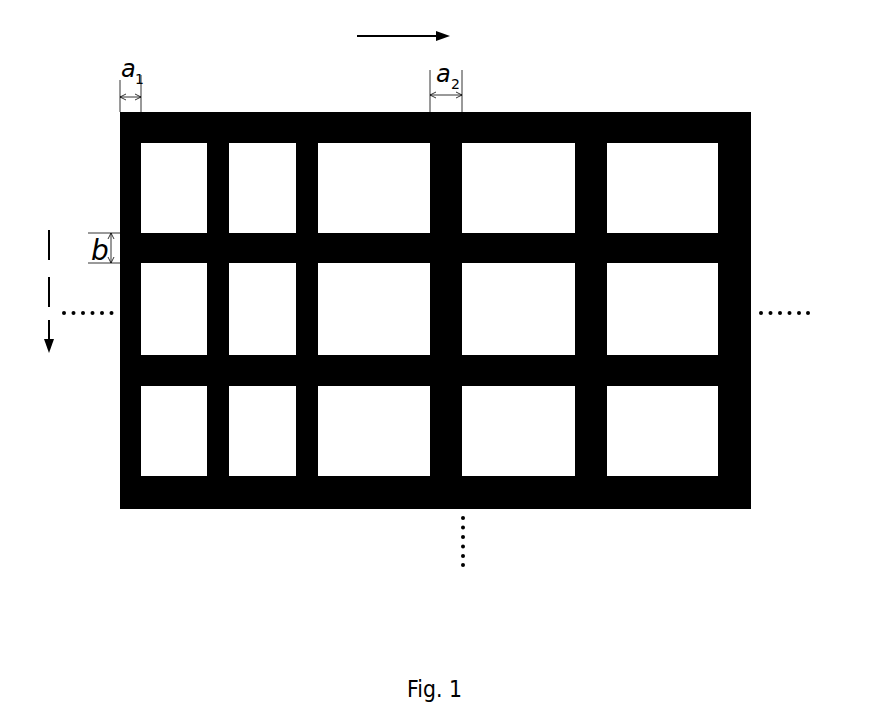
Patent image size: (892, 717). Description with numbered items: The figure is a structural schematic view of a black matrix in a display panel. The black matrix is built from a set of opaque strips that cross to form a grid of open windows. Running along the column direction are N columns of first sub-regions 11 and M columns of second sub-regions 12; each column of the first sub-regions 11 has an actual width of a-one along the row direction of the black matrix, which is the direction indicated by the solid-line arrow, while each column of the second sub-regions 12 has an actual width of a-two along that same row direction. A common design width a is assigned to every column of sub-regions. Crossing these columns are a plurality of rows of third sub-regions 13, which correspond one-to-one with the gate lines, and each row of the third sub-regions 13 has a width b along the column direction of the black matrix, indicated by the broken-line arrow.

The first sub-regions 11 is at (240, 310).
The second sub-regions 12 is at (610, 310).
The third sub-regions 13 is at (435, 306).